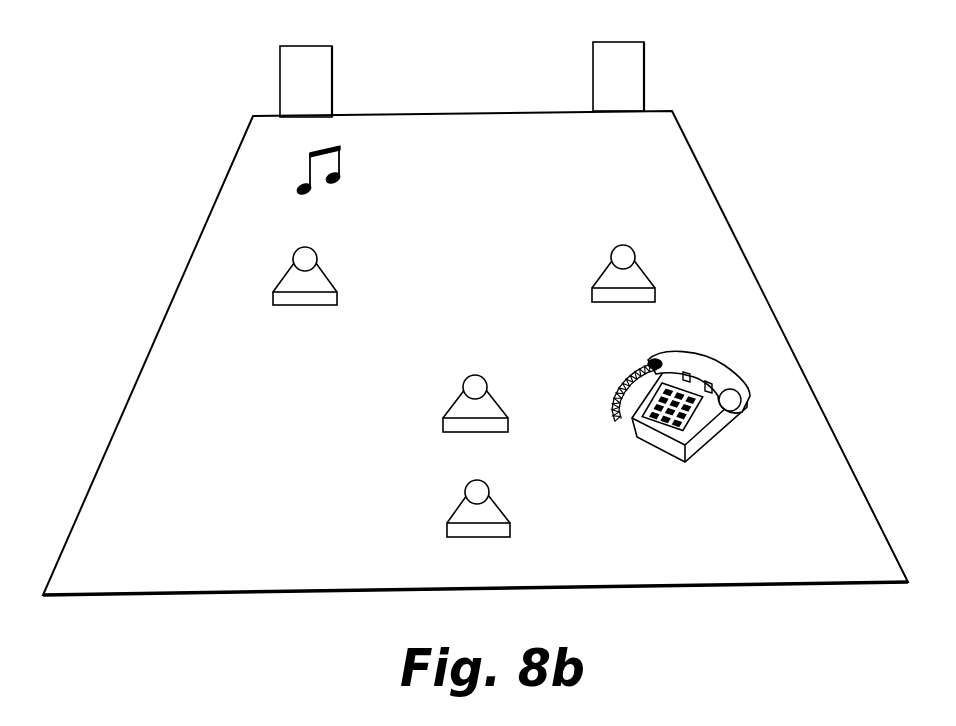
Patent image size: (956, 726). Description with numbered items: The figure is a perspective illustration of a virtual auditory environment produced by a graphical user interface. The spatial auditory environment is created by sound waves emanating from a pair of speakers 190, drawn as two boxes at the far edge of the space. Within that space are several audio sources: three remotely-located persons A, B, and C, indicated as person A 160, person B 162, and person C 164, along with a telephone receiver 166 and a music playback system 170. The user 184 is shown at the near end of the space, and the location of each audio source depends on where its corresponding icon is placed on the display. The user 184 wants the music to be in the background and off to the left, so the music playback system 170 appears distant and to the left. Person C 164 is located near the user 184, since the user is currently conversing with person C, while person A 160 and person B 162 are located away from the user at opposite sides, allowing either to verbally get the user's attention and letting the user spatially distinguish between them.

The pair of speakers 190 is at (332, 57).
The music playback system 170 is at (343, 176).
The remotely-located person A 160 is at (316, 308).
The remotely-located person B 162 is at (600, 305).
The remotely-located person C 164 is at (452, 434).
The user 184 is at (458, 538).
The telephone receiver 166 is at (708, 442).